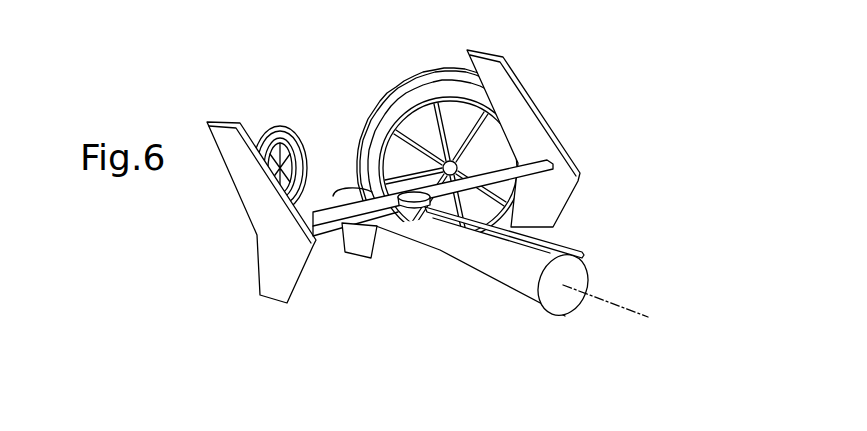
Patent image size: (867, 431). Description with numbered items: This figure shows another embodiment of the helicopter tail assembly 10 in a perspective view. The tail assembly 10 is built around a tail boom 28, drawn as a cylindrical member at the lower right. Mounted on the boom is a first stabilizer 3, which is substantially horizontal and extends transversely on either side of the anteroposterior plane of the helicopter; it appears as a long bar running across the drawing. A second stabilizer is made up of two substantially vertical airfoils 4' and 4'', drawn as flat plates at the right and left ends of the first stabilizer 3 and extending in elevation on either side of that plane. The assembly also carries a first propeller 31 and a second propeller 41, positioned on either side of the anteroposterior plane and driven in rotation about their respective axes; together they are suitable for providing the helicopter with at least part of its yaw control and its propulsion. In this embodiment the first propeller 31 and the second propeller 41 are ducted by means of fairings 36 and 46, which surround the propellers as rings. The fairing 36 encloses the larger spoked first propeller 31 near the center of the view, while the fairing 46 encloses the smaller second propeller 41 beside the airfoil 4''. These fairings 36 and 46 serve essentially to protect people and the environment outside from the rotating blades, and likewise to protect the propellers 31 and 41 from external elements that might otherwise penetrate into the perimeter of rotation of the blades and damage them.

The tail assembly 10 is at (210, 294).
The first stabilizer 3 is at (327, 220).
The airfoil 4' is at (545, 138).
The airfoil 4'' is at (247, 212).
The tail boom 28 is at (450, 243).
The first propeller 31 is at (414, 120).
The fairing 36 is at (378, 106).
The second propeller 41 is at (292, 158).
The fairing 46 is at (271, 125).